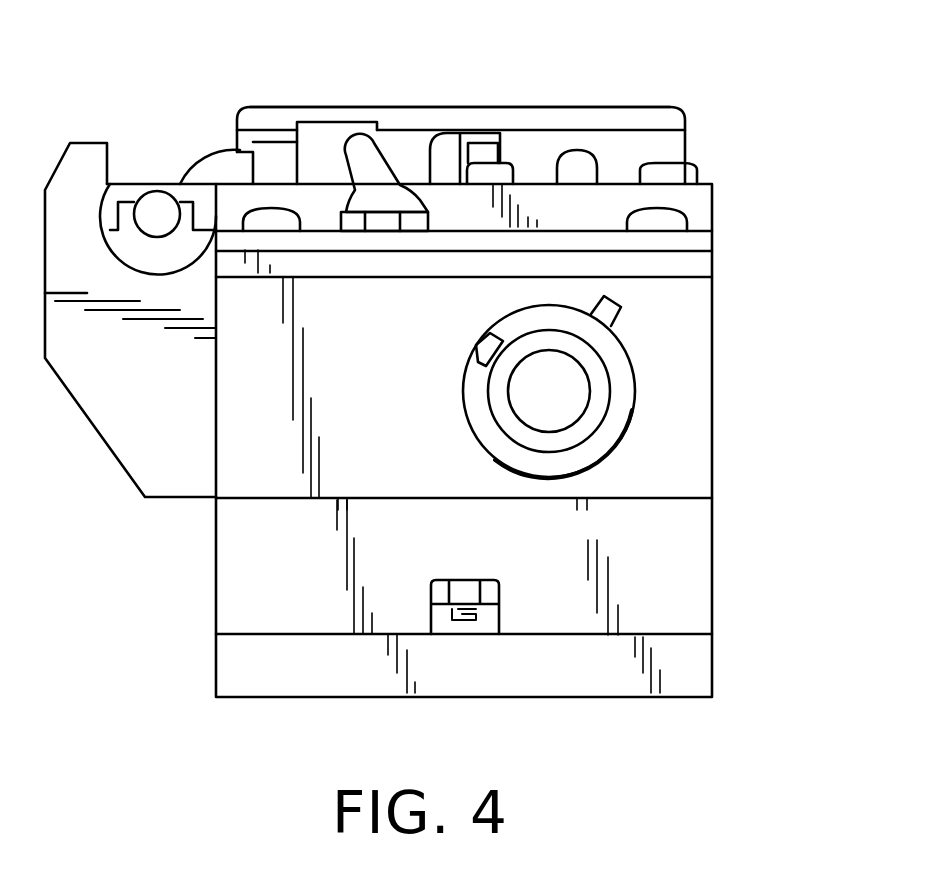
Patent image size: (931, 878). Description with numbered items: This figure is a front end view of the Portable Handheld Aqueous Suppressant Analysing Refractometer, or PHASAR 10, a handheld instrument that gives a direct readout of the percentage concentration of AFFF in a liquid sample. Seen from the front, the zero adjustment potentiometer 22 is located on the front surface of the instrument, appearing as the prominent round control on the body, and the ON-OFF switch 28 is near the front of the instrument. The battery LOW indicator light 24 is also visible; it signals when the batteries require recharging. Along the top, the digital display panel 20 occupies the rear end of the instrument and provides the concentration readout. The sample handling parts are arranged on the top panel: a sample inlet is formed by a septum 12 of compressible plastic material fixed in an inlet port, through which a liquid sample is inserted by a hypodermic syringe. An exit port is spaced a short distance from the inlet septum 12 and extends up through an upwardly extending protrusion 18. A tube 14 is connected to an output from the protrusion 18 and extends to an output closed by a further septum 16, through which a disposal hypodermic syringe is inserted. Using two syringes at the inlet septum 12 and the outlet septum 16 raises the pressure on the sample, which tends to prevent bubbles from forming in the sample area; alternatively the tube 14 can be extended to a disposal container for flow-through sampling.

The PHASAR 10 is at (745, 281).
The septum 12 is at (502, 146).
The tube 14 is at (213, 156).
The septum 16 is at (152, 196).
The protrusion 18 is at (320, 122).
The digital display panel 20 is at (480, 105).
The zero adjustment potentiometer 22 is at (634, 400).
The battery LOW indicator light 24 is at (597, 165).
The ON-OFF switch 28 is at (360, 150).